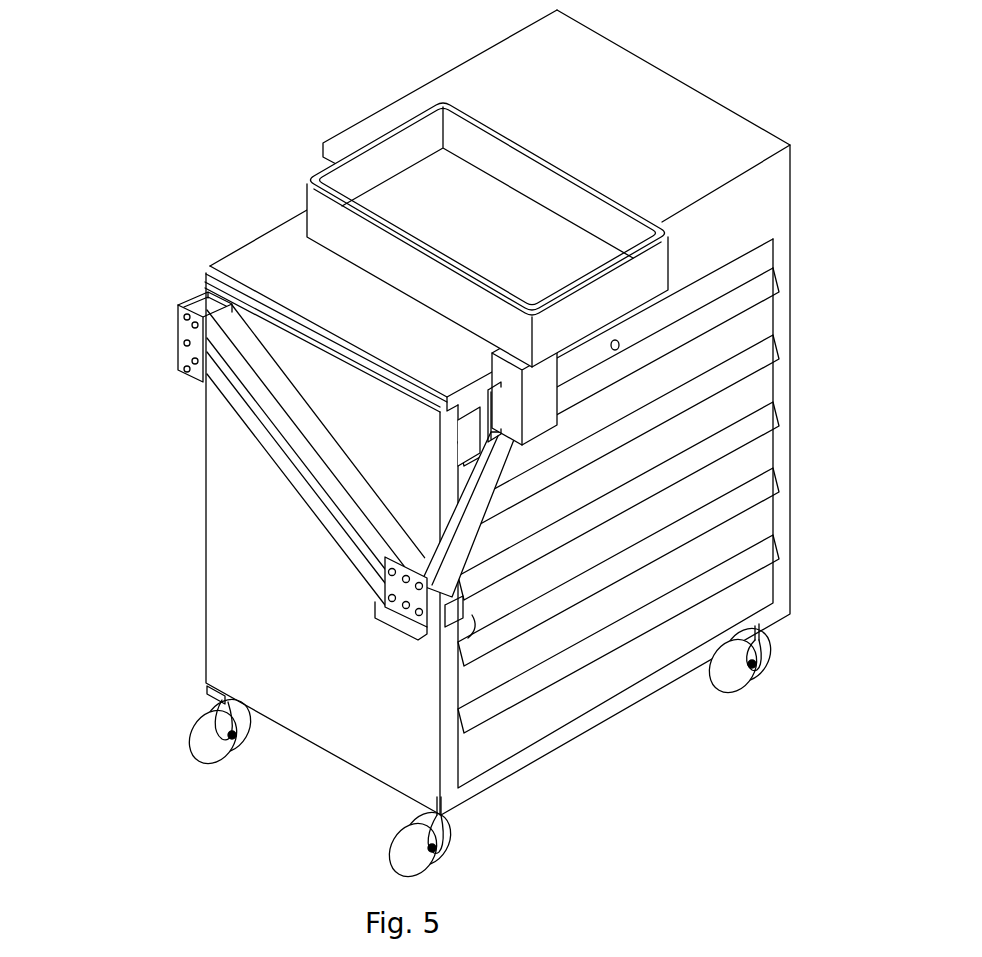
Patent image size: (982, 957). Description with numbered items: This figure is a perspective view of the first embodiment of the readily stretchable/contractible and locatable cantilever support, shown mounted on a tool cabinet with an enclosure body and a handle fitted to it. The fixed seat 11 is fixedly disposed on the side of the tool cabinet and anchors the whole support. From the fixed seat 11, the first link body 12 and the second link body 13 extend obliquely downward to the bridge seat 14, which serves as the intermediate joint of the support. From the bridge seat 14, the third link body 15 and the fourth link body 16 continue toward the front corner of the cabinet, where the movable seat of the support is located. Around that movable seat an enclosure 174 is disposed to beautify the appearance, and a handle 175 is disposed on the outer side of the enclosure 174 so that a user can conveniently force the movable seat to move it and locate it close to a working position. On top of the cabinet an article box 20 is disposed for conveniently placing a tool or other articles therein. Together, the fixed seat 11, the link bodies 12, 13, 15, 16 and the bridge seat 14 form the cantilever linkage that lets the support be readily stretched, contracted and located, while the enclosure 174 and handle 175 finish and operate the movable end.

The article box 20 is at (372, 135).
The fixed seat 11 is at (178, 337).
The first link body 12 is at (253, 362).
The second link body 13 is at (258, 427).
The bridge seat 14 is at (380, 582).
The third link body 15 is at (460, 483).
The fourth link body 16 is at (472, 615).
The enclosure 174 is at (545, 412).
The handle 175 is at (494, 386).